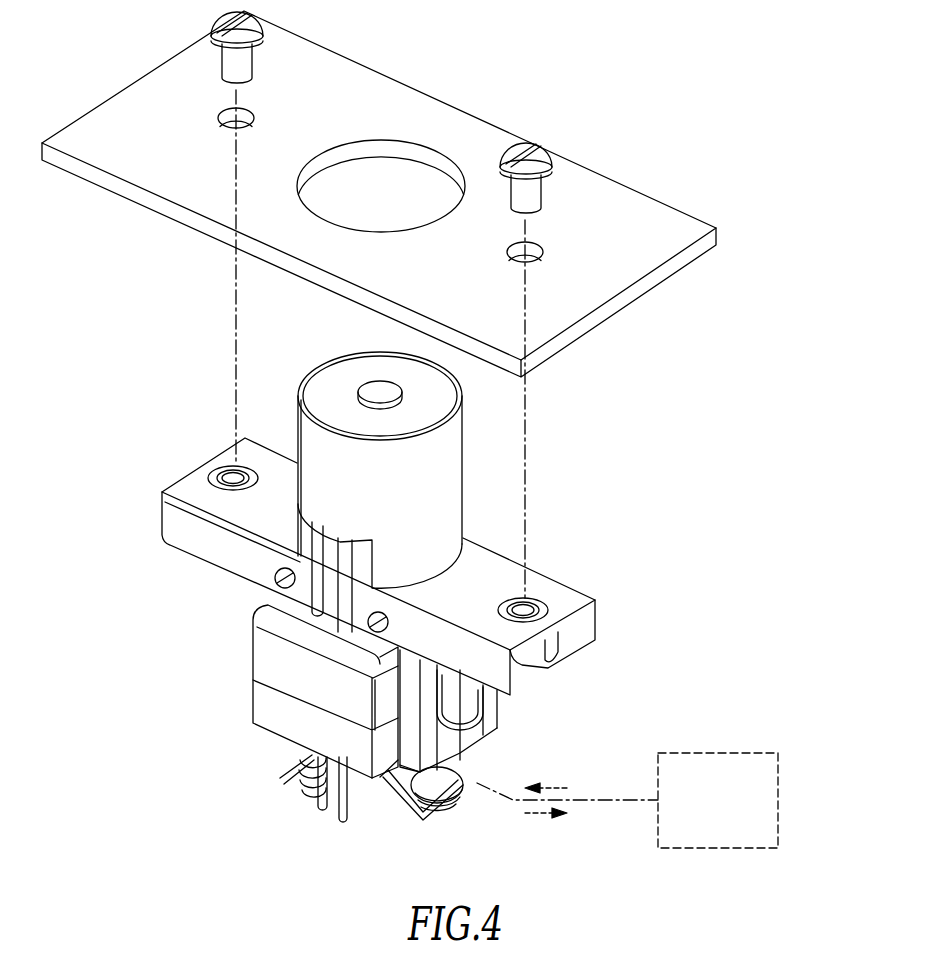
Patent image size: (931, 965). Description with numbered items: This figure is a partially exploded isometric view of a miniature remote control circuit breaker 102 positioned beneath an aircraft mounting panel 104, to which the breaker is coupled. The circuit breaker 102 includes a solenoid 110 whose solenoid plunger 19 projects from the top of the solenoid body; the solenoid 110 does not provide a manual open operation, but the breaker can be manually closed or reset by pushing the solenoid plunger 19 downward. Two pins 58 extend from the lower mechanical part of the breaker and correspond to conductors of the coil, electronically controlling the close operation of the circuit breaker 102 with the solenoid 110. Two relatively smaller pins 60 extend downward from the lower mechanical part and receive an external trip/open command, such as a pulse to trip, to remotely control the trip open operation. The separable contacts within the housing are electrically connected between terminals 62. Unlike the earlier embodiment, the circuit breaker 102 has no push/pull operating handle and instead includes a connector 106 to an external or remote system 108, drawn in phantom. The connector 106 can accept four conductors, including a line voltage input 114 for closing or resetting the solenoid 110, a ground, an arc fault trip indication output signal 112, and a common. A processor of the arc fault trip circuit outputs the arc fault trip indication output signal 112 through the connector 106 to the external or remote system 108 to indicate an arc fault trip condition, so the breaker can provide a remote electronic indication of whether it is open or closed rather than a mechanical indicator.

The miniature remote control circuit breaker 102 is at (470, 52).
The aircraft mounting panel 104 is at (623, 203).
The solenoid plunger 19 is at (378, 388).
The solenoid 110 is at (441, 458).
The pins 58 is at (347, 612).
The connector 106 is at (267, 705).
The pins 60 is at (340, 812).
The terminals 62 is at (393, 792).
The arc fault trip indication output signal 112 is at (541, 820).
The line voltage input 114 is at (552, 785).
The external or remote system 108 is at (762, 753).